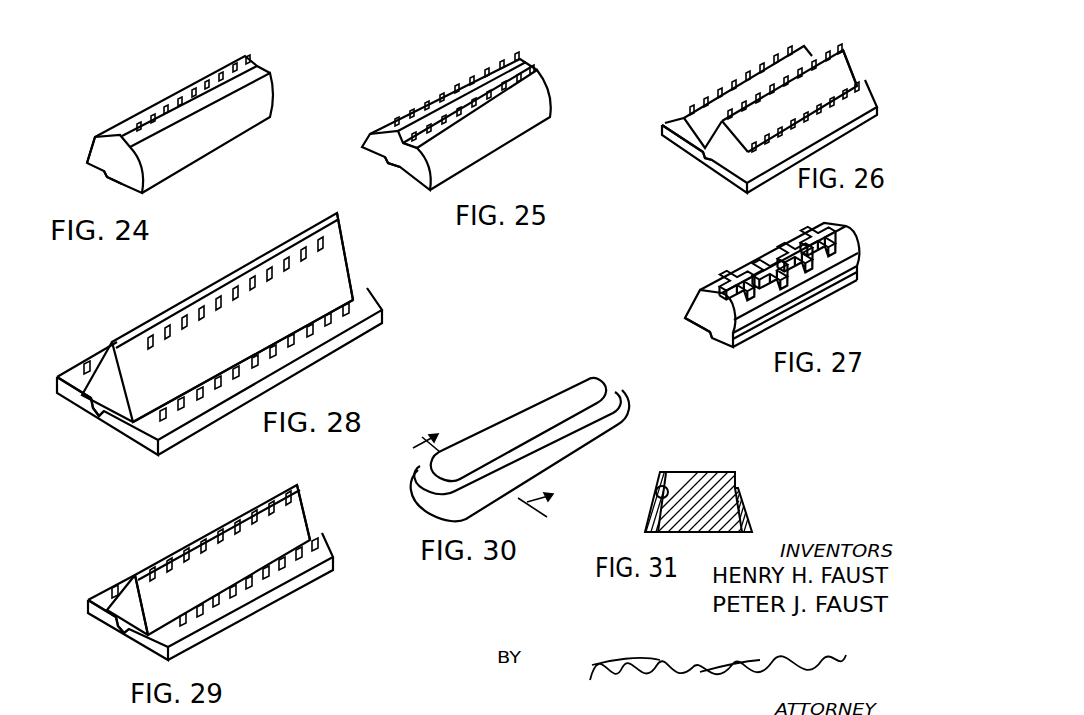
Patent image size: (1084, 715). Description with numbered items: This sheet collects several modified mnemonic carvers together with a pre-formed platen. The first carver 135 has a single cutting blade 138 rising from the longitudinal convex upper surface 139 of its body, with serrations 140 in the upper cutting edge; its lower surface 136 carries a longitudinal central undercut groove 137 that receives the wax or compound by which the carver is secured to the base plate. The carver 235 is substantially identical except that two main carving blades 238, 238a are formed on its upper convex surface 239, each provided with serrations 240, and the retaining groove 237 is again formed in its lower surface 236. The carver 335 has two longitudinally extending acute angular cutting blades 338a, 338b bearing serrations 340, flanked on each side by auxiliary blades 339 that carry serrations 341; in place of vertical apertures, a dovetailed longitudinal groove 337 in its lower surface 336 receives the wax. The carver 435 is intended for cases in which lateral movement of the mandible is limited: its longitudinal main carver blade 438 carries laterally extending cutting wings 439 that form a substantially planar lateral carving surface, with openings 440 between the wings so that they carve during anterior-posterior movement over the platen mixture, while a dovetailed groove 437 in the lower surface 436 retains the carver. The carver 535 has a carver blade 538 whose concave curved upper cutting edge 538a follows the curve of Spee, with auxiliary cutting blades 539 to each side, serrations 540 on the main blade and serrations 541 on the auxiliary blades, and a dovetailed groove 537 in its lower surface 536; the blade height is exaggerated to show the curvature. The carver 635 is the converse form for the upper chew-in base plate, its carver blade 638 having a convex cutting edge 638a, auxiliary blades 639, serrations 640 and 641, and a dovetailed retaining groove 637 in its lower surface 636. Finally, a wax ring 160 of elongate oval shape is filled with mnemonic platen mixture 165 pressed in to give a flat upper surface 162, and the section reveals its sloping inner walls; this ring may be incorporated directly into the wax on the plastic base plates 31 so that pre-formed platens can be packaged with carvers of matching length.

In FIG. 24, the carver 135 is at (195, 144).
In FIG. 24, the lower surface 136 is at (90, 167).
In FIG. 24, the undercut groove 137 is at (118, 177).
In FIG. 24, the cutting blade 138 is at (281, 37).
In FIG. 24, the convex upper surface 139 is at (250, 102).
In FIG. 24, the serrations 140 is at (200, 83).
In FIG. 25, the carver 235 is at (493, 131).
In FIG. 25, the lower surface 236 is at (387, 163).
In FIG. 25, the retaining groove 237 is at (415, 167).
In FIG. 25, the main carving blade 238 is at (528, 42).
In FIG. 25, the main carving blade 238a is at (537, 70).
In FIG. 25, the upper convex surface 239 is at (533, 107).
In FIG. 25, the serrations 240 is at (473, 93).
In FIG. 26, the carver 335 is at (814, 131).
In FIG. 26, the lower surface 336 is at (672, 143).
In FIG. 26, the dovetailed longitudinal groove 337 is at (704, 158).
In FIG. 26, the acute angular cutting blade 338a is at (856, 27).
In FIG. 26, the acute angular cutting blade 338b is at (897, 8).
In FIG. 26, the auxiliary blades 339 is at (757, 180).
In FIG. 26, the serrations 340 is at (787, 57).
In FIG. 26, the serrations 341 is at (698, 103).
In FIG. 27, the carver 435 is at (795, 288).
In FIG. 27, the lower surface 436 is at (690, 322).
In FIG. 27, the dovetailed groove 437 is at (710, 333).
In FIG. 27, the main carver blade 438 is at (753, 267).
In FIG. 27, the lateral cutting wings 439 is at (757, 257).
In FIG. 27, the openings 440 is at (797, 233).
In FIG. 28, the carver 535 is at (298, 364).
In FIG. 28, the lower surface 536 is at (88, 410).
In FIG. 28, the dovetailed groove 537 is at (103, 418).
In FIG. 28, the carver blade 538 is at (133, 342).
In FIG. 28, the concave curved upper cutting edge 538a is at (227, 280).
In FIG. 28, the auxiliary cutting blades 539 is at (88, 364).
In FIG. 28, the serrations 540 is at (283, 263).
In FIG. 28, the serrations 541 is at (193, 397).
In FIG. 29, the carver 635 is at (267, 588).
In FIG. 29, the lower surface 636 is at (117, 623).
In FIG. 29, the dovetailed retaining groove 637 is at (128, 635).
In FIG. 29, the carver blade 638 is at (240, 540).
In FIG. 29, the convex cutting edge 638a is at (193, 523).
In FIG. 29, the auxiliary blades 639 is at (110, 593).
In FIG. 29, the serrations 640 is at (293, 493).
In FIG. 29, the serrations 641 is at (137, 572).
In FIG. 30, the wax ring 160 is at (603, 430).
In FIG. 31, the wax ring 160 is at (658, 489).
In FIG. 30, the flat upper surface 162 is at (483, 443).
In FIG. 31, the flat upper surface 162 is at (735, 473).
In FIG. 30, the mnemonic platen mixture 165 is at (533, 412).
In FIG. 31, the mnemonic platen mixture 165 is at (698, 480).
In FIG. 30, the plastic base plates 31 is at (477, 486).